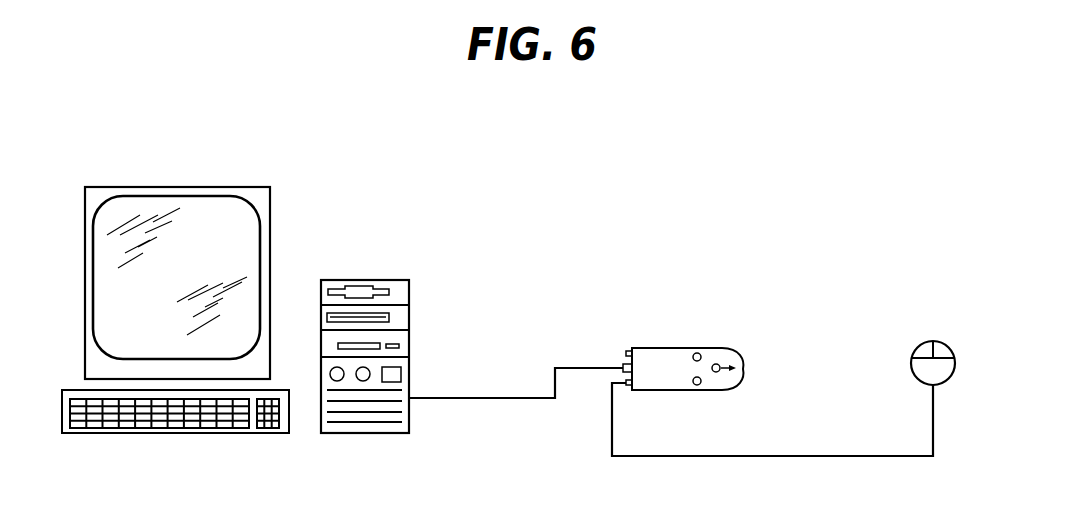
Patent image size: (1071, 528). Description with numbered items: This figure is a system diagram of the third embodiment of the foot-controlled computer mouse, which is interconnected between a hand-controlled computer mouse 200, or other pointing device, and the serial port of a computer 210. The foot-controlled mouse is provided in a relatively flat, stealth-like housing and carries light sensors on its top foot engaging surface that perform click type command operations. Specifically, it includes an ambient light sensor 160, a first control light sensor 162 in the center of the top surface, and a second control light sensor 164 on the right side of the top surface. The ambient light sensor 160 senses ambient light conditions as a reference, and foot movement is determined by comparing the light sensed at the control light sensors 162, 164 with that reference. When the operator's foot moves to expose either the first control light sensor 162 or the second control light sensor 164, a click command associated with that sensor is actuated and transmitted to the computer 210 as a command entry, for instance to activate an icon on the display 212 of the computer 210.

The display 212 is at (205, 243).
The computer 210 is at (367, 280).
The ambient light sensor 160 is at (696, 353).
The first control light sensor 162 is at (717, 364).
The second control light sensor 164 is at (697, 386).
The hand-controlled computer mouse 200 is at (918, 382).